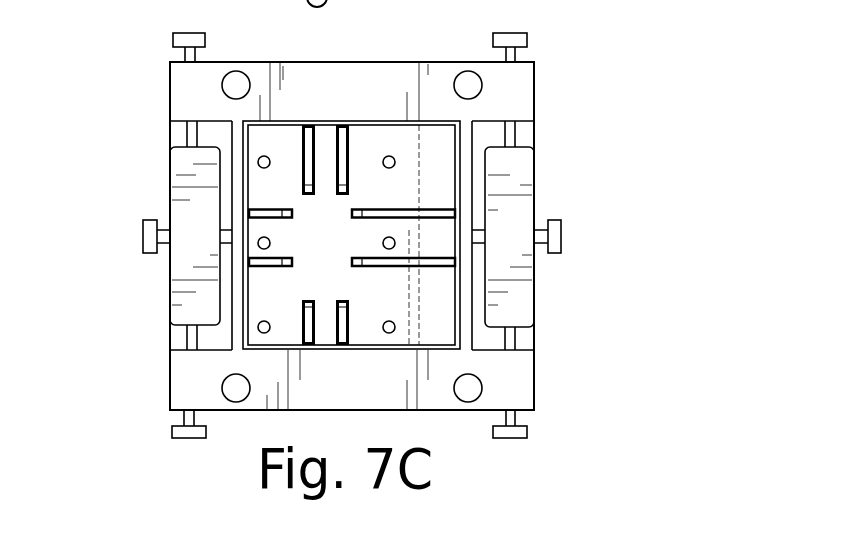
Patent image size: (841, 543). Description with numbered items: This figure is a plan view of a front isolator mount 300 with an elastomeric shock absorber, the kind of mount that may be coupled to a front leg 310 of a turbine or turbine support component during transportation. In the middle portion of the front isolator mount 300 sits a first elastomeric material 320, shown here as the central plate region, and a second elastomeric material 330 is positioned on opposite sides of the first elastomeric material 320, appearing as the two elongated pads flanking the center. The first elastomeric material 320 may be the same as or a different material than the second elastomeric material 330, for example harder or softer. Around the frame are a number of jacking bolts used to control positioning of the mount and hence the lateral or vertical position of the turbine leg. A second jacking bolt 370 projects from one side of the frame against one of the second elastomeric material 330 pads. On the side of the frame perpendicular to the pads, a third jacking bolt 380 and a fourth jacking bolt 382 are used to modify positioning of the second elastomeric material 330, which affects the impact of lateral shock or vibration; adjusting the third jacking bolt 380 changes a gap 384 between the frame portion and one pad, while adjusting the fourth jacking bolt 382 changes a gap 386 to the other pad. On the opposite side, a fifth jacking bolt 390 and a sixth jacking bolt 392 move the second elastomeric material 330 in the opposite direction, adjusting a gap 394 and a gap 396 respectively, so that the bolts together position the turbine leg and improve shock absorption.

The front isolator mount 300 is at (610, 62).
The front leg 310 is at (353, 180).
The first elastomeric material 320 is at (368, 157).
The second elastomeric material 330 is at (180, 195).
The second jacking bolt 370 is at (561, 237).
The third jacking bolt 380 is at (173, 47).
The fourth jacking bolt 382 is at (527, 45).
The gap 384 is at (183, 142).
The gap 386 is at (523, 140).
The fifth jacking bolt 390 is at (173, 427).
The sixth jacking bolt 392 is at (526, 427).
The gap 394 is at (185, 345).
The gap 396 is at (525, 343).